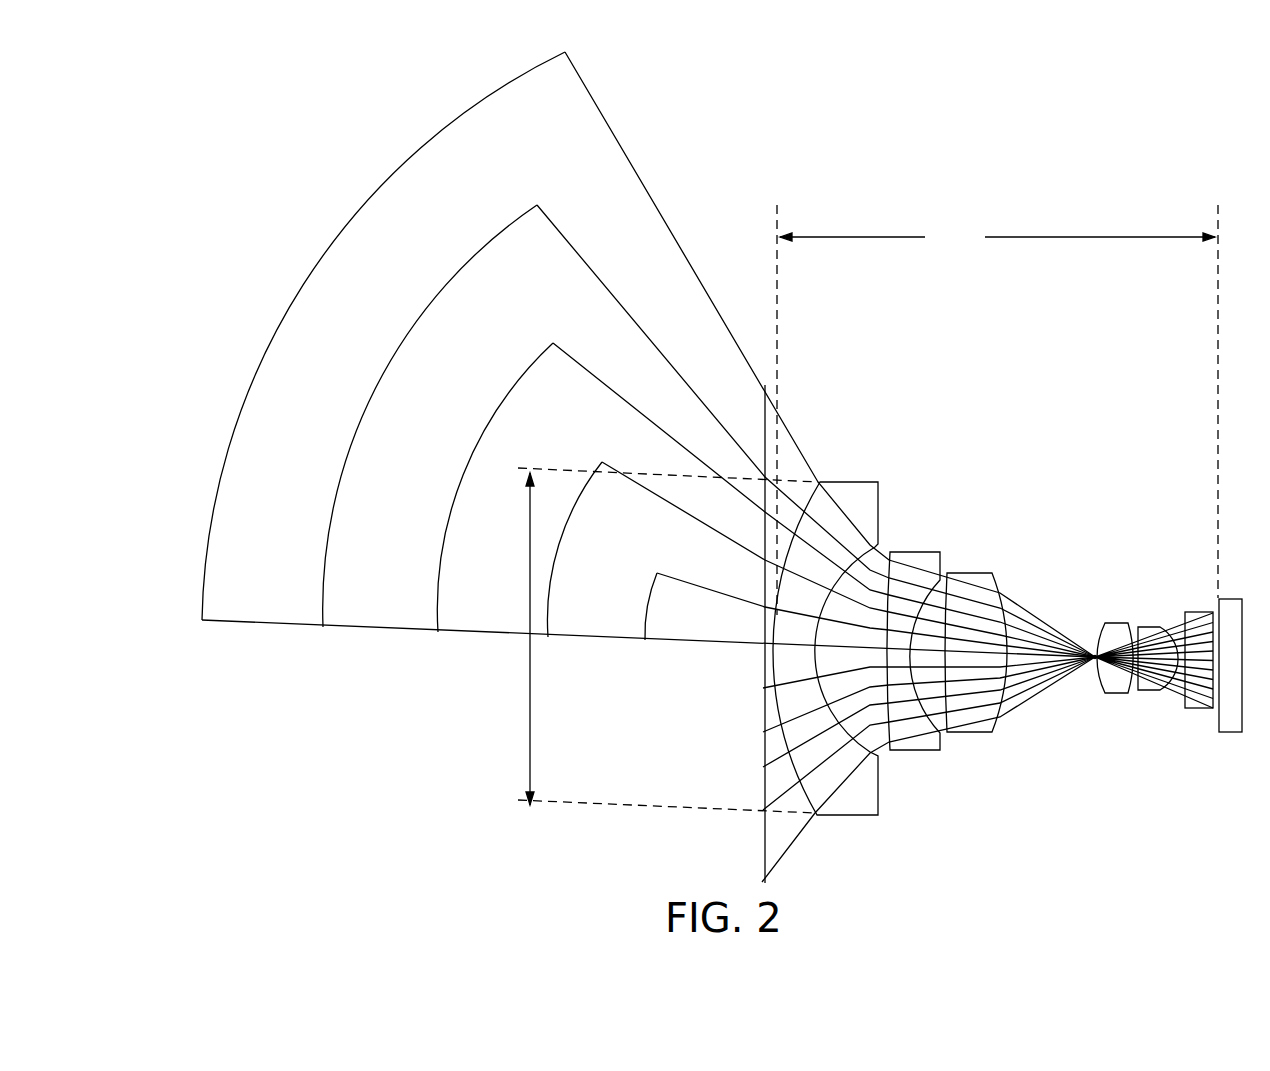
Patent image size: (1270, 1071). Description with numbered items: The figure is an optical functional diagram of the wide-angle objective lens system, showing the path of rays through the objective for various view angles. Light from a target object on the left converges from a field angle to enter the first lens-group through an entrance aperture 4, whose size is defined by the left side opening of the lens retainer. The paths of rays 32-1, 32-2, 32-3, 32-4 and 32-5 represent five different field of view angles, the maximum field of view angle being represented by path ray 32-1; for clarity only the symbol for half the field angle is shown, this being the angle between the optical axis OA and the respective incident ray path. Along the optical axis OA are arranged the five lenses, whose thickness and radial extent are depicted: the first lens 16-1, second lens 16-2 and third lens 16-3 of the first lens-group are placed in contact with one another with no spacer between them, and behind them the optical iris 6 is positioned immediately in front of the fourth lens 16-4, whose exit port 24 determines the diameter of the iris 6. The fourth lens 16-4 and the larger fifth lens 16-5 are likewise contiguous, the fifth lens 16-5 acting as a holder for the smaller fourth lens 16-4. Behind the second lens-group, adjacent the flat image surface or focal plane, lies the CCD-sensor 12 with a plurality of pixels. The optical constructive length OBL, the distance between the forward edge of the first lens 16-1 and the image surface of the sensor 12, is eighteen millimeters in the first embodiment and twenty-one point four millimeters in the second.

The path of rays 32-1 is at (612, 114).
The path of rays 32-2 is at (555, 225).
The path of rays 32-3 is at (555, 343).
The path of rays 32-4 is at (603, 460).
The path of rays 32-5 is at (659, 572).
The optical axis OA is at (272, 626).
The optical constructive length OBL is at (997, 238).
The entrance aperture 4 is at (520, 756).
The first lens 16-1 is at (862, 479).
The second lens 16-2 is at (931, 549).
The third lens 16-3 is at (986, 573).
The optical iris 6 is at (1093, 652).
The fourth lens 16-4 is at (1110, 621).
The fifth lens 16-5 is at (1150, 627).
The exit port 24 is at (1196, 612).
The CCD-sensor 12 is at (1232, 599).